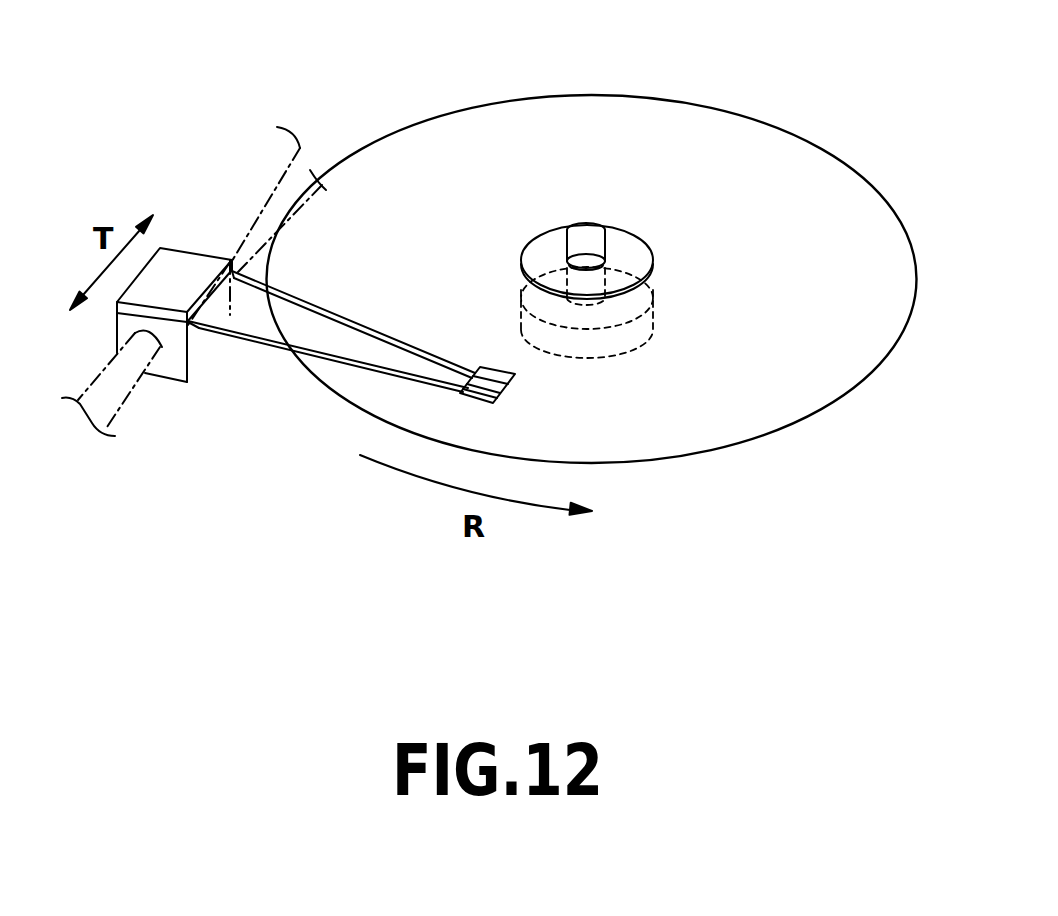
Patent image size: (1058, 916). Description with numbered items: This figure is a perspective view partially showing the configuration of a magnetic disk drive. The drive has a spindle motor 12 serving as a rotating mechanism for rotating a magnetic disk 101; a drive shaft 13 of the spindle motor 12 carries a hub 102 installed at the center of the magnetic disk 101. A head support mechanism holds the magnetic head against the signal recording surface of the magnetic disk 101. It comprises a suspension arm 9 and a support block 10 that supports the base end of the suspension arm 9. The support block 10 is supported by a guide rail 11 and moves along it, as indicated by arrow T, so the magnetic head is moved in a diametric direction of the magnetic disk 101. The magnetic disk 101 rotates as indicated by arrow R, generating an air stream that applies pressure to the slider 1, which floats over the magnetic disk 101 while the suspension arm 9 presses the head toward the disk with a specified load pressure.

The slider 1 is at (505, 382).
The suspension arm 9 is at (323, 335).
The support block 10 is at (190, 267).
The guide rail 11 is at (255, 203).
The spindle motor 12 is at (653, 318).
The drive shaft 13 is at (607, 232).
The magnetic disk 101 is at (722, 134).
The hub 102 is at (550, 243).